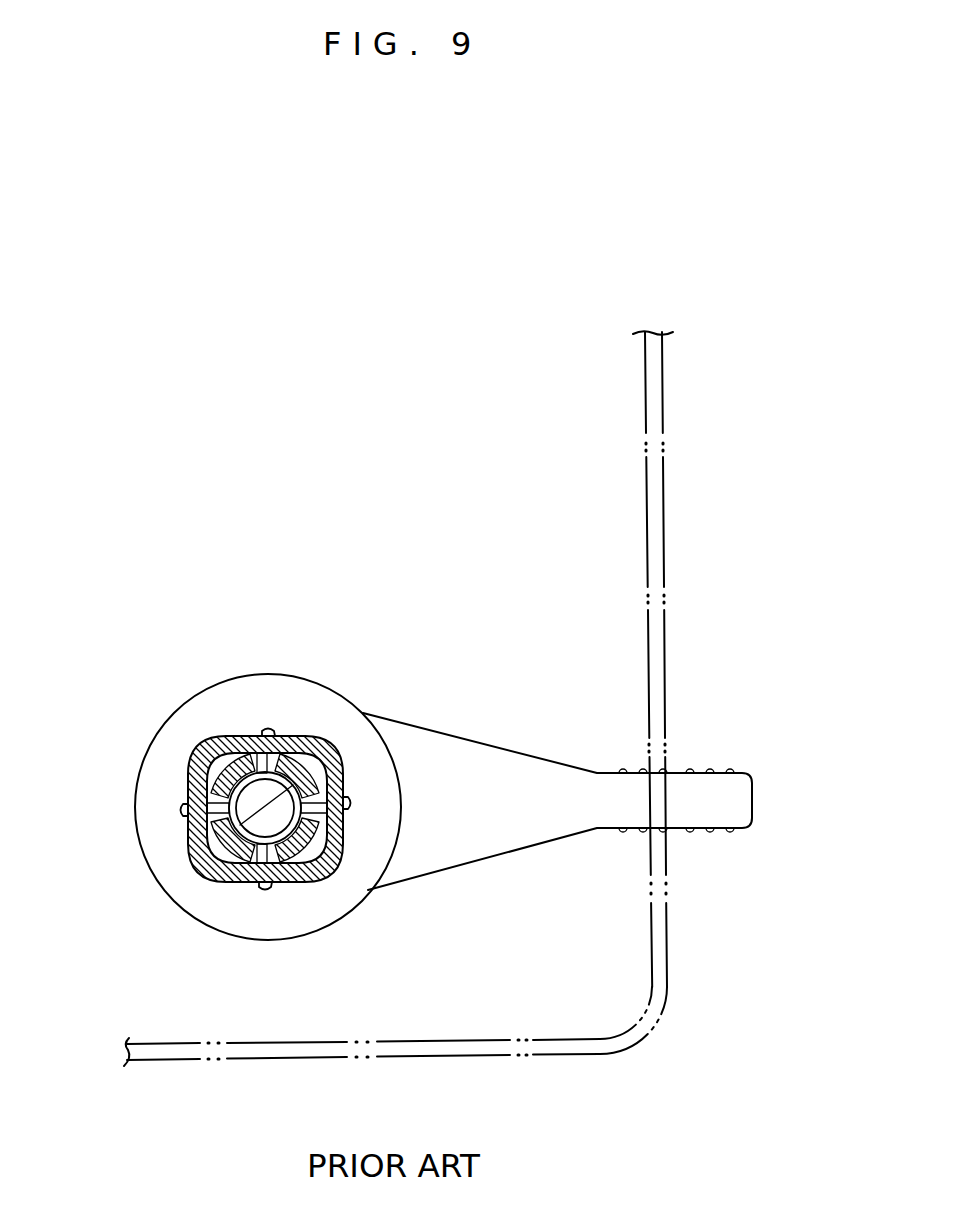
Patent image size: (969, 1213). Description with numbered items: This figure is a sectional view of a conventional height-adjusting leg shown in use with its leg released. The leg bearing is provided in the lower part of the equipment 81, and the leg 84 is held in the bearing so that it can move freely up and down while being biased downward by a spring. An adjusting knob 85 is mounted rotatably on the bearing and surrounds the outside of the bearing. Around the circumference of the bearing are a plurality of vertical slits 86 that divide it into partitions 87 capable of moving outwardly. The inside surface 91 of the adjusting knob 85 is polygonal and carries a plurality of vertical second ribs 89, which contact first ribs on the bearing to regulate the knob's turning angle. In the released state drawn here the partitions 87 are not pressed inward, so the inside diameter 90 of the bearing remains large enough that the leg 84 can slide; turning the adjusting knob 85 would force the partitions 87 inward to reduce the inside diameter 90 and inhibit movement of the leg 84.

The equipment 81 is at (658, 548).
The leg 84 is at (265, 787).
The adjusting knob 85 is at (742, 770).
The slits 86 is at (262, 760).
The partitions 87 is at (317, 740).
The second ribs 89 is at (218, 793).
The inside diameter 90 is at (262, 811).
The inside surface 91 is at (243, 740).